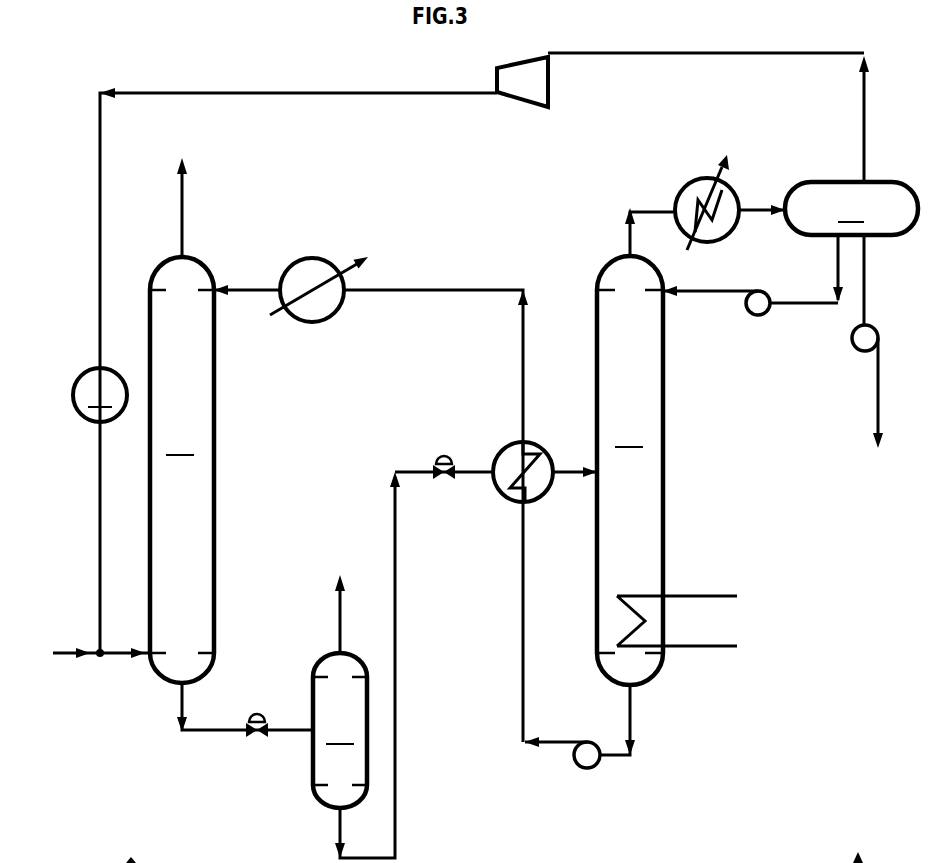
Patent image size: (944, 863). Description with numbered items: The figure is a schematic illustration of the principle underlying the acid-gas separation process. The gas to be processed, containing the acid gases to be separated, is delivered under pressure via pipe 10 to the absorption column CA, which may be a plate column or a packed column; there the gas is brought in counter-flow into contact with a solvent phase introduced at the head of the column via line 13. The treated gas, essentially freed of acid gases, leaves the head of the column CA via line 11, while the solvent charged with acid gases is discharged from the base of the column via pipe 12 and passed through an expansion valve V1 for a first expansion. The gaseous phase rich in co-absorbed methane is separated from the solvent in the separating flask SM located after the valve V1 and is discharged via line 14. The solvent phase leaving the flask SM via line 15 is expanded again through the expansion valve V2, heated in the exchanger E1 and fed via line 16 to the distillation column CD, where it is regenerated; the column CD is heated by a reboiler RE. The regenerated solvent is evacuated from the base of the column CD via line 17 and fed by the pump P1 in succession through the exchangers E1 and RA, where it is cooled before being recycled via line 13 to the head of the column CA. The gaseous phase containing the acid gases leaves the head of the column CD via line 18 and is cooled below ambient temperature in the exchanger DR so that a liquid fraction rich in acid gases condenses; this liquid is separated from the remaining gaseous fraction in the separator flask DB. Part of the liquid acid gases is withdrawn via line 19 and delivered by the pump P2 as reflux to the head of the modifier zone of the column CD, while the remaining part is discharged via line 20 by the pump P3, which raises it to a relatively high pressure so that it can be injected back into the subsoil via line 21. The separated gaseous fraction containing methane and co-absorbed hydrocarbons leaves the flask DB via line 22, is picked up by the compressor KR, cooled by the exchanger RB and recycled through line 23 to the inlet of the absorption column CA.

The pipe 10 is at (125, 656).
The line 11 is at (182, 197).
The pipe 12 is at (182, 710).
The line 13 is at (255, 292).
The line 14 is at (337, 612).
The line 15 is at (395, 590).
The line 16 is at (565, 478).
The line 17 is at (632, 735).
The line 18 is at (622, 232).
The line 19 is at (797, 305).
The line 20 is at (865, 283).
The line 21 is at (877, 412).
The line 22 is at (640, 55).
The line 23 is at (348, 95).
The absorption column CA is at (182, 470).
The distillation column CD is at (630, 470).
The separating flask SM is at (340, 730).
The separator flask DB is at (851, 208).
The exchanger RB is at (100, 395).
The exchanger RA is at (319, 277).
The exchanger DR is at (704, 202).
The exchanger E1 is at (524, 459).
The compressor KR is at (522, 93).
The reboiler RE is at (677, 607).
The pump P1 is at (587, 772).
The pump P2 is at (760, 288).
The pump P3 is at (879, 338).
The expansion valve V1 is at (257, 715).
The expansion valve V2 is at (444, 453).